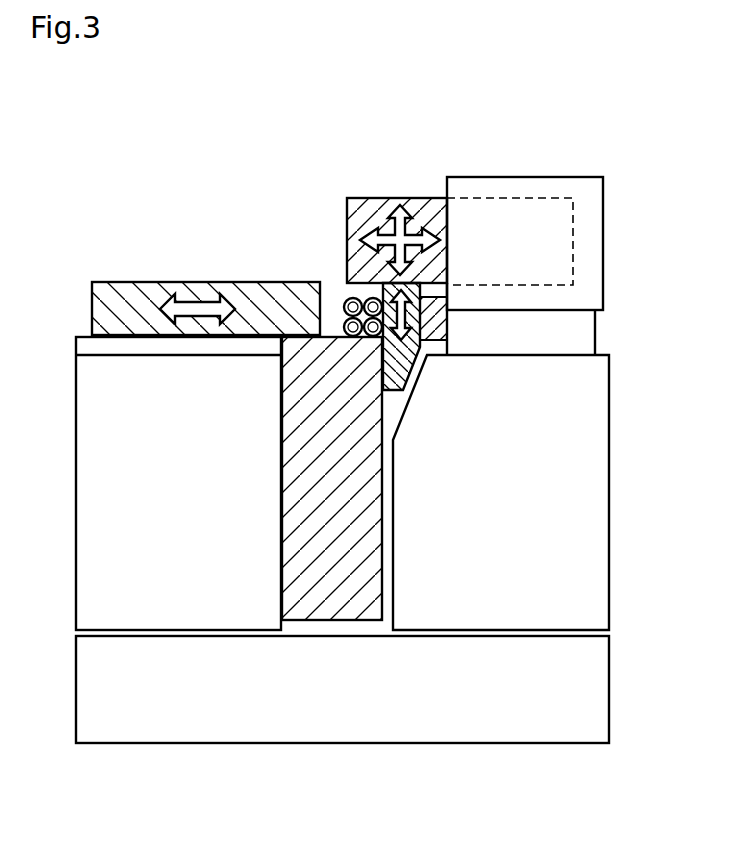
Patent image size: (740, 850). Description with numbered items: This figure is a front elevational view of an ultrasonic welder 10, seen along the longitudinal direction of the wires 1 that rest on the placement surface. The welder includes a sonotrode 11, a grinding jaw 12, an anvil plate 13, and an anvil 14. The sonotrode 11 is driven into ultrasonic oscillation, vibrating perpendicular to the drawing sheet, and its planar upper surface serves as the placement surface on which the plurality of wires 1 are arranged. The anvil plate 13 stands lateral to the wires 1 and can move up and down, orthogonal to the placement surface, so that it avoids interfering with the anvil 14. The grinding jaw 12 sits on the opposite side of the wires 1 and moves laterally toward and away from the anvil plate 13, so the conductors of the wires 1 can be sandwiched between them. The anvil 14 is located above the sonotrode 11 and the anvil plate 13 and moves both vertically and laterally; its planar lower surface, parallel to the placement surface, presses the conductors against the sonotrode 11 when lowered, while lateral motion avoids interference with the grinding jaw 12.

The ultrasonic welder 10 is at (140, 133).
The sonotrode 11 is at (297, 448).
The grinding jaw 12 is at (145, 300).
The wires 1 is at (345, 300).
The anvil 14 is at (376, 206).
The anvil plate 13 is at (405, 360).